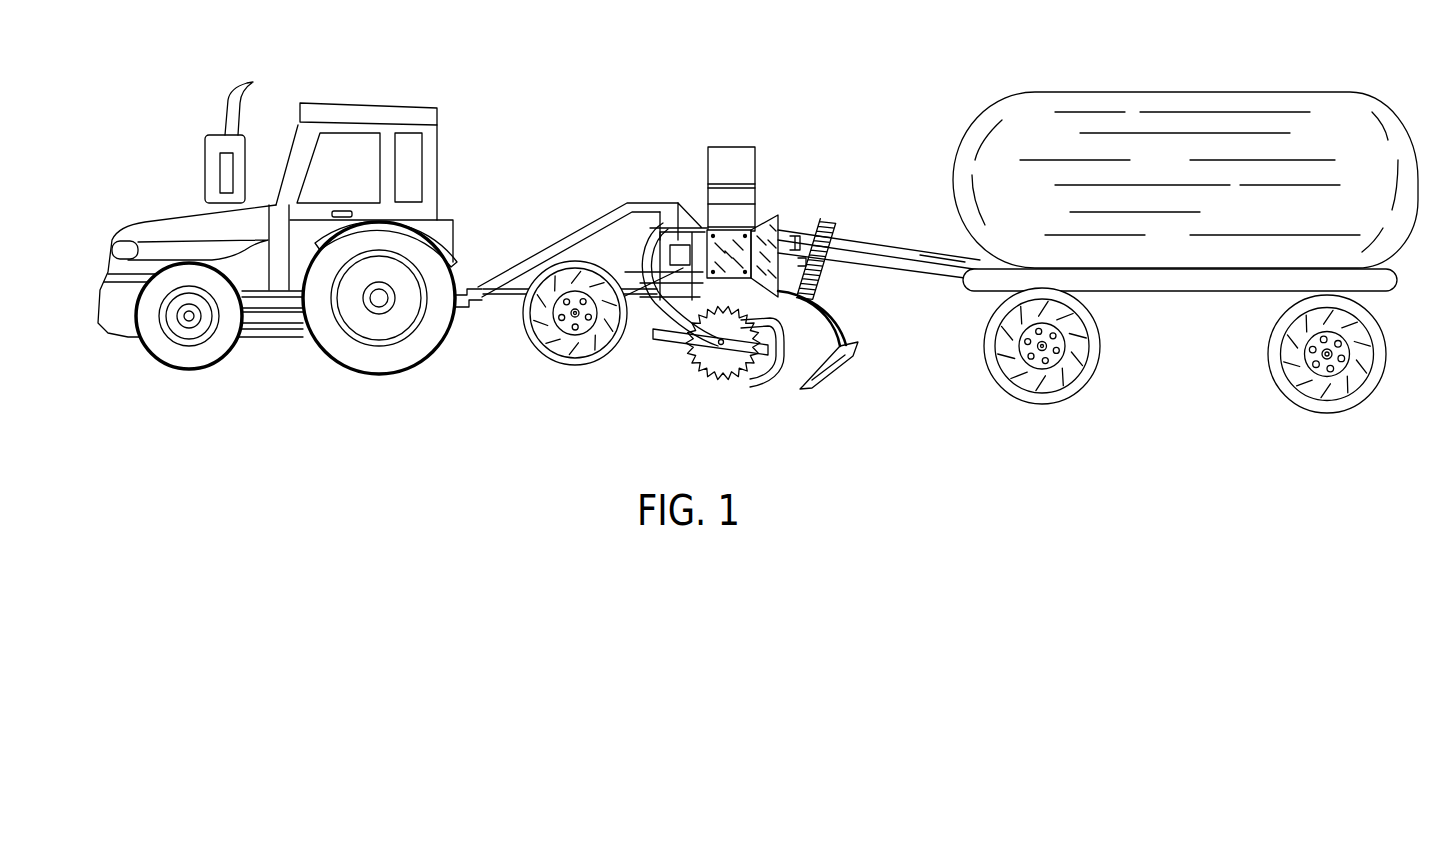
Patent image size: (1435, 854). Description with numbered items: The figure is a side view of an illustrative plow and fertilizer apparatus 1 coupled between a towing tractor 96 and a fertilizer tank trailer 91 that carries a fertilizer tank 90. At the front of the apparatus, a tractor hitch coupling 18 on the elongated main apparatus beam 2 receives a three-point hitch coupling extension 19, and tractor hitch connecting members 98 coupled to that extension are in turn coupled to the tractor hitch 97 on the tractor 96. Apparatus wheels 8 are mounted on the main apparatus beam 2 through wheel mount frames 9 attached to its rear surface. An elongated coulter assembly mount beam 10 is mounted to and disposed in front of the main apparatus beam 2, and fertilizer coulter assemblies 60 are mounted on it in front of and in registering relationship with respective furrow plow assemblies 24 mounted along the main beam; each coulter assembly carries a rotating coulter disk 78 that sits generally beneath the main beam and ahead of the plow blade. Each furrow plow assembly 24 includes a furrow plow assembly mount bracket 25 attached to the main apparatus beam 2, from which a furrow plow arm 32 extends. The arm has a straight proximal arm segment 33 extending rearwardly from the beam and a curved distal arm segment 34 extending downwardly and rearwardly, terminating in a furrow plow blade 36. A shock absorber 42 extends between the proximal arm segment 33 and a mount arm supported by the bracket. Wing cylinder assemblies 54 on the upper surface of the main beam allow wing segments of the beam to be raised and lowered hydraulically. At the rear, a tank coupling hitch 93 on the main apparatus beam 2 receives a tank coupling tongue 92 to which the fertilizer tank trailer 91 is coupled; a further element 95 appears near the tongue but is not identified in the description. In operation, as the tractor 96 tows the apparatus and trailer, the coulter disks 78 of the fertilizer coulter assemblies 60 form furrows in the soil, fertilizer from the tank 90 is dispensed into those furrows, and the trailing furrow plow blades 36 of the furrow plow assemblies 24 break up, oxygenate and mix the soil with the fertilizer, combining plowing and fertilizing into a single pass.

The plow and fertilizer apparatus 1 is at (693, 150).
The main apparatus beam 2 is at (721, 294).
The apparatus wheels 8 is at (555, 362).
The wheel mount frames 9 is at (626, 285).
The coulter assembly mount beam 10 is at (679, 282).
The tractor hitch coupling 18 is at (683, 208).
The three-point hitch coupling extension 19 is at (619, 208).
The furrow plow assembly 24 is at (844, 392).
The furrow plow assembly mount bracket 25 is at (776, 200).
The furrow plow arm 32 is at (830, 345).
The proximal arm segment 33 is at (788, 298).
The distal arm segment 34 is at (841, 340).
The furrow plow blade 36 is at (800, 389).
The shock absorber 42 is at (832, 232).
The wing cylinder assemblies 54 is at (735, 140).
The fertilizer coulter assembly 60 is at (685, 388).
The coulter disk 78 is at (717, 380).
The fertilizer tank 90 is at (1145, 112).
The fertilizer tank trailer 91 is at (1210, 280).
The tank coupling tongue 92 is at (920, 260).
The tank coupling hitch 93 is at (815, 232).
The tongue 95 is at (934, 257).
The towing tractor 96 is at (392, 110).
The tractor hitch 97 is at (470, 310).
The tractor hitch connecting members 98 is at (543, 248).